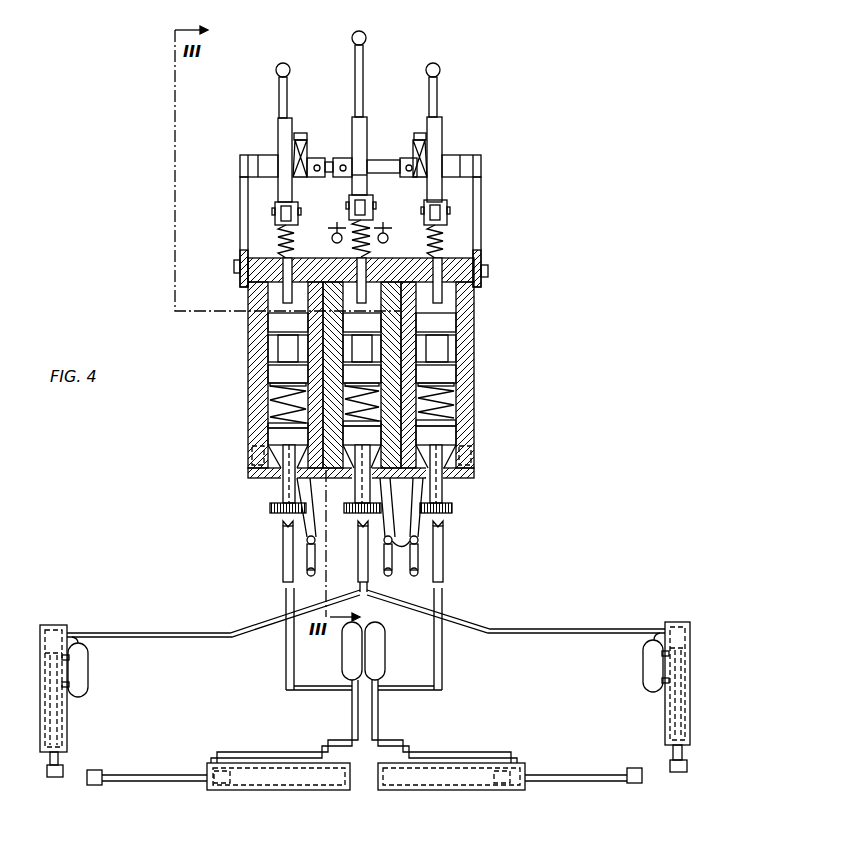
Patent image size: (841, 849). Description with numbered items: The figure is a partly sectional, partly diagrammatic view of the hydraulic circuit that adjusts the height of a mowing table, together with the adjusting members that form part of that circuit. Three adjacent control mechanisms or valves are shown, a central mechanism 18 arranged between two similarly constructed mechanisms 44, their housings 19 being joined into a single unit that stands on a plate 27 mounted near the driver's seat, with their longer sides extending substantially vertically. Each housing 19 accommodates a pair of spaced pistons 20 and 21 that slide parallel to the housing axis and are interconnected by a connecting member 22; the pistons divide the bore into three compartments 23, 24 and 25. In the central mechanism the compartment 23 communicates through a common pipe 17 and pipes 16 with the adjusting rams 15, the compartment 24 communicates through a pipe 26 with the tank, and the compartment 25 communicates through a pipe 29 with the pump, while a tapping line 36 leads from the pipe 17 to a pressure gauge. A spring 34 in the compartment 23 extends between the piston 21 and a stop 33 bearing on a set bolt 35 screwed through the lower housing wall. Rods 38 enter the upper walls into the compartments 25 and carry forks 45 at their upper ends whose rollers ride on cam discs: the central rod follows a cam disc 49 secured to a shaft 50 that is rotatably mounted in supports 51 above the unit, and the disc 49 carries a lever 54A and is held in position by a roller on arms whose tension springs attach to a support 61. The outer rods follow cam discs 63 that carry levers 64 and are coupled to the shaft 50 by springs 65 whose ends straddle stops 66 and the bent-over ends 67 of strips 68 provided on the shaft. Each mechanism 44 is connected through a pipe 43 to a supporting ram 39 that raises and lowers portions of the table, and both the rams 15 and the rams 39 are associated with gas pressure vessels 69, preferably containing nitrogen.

The adjusting cylinder or ram 15 is at (67, 728).
The pipe 16 is at (185, 633).
The common pipe 17 is at (368, 590).
The control mechanism or valve 18 is at (357, 365).
The housing 19 is at (250, 458).
The piston 20 is at (268, 323).
The piston 21 is at (268, 373).
The connecting member 22 is at (280, 352).
The compartment 23 is at (268, 405).
The compartment 24 is at (213, 356).
The compartment 25 is at (268, 285).
The pipe 26 is at (315, 541).
The plate 27 is at (474, 474).
The pipe 29 is at (314, 576).
The stop 33 is at (268, 425).
The spring 34 is at (458, 387).
The set bolt 35 is at (283, 492).
The tapping line 36 is at (283, 557).
The rod 38 is at (262, 298).
The supporting member or ram 39 is at (284, 790).
The pipe 43 is at (352, 722).
The control mechanism or valve 44 is at (250, 398).
The fork 45 is at (280, 221).
The cam disc 49 is at (366, 120).
The shaft 50 is at (388, 174).
The support 51 is at (242, 200).
The lever 54A is at (366, 52).
The support 61 is at (337, 226).
The cam disc 63 is at (280, 124).
The lever 64 is at (281, 85).
The spring 65 is at (298, 171).
The stop 66 is at (306, 136).
The bent-over end 67 is at (306, 142).
The strip 68 is at (312, 153).
The gas pressure vessel 69 is at (374, 652).